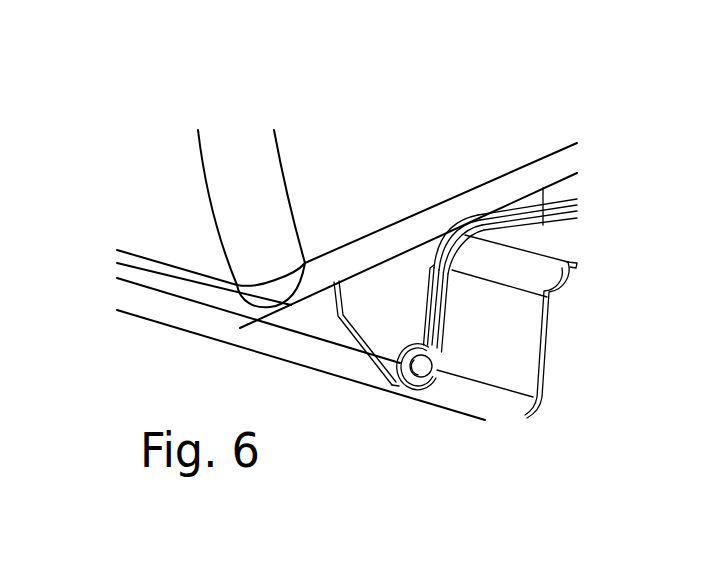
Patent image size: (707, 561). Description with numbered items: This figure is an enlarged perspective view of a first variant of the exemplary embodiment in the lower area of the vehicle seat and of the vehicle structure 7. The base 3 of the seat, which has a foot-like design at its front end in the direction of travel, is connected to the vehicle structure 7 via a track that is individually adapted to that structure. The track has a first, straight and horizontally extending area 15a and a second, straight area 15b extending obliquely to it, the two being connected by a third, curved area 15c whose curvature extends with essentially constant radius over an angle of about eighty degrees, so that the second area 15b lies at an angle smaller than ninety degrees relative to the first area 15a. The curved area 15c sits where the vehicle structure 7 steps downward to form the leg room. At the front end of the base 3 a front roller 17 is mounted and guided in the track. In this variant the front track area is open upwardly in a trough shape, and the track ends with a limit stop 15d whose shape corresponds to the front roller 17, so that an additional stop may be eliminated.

The base 3 is at (358, 302).
The vehicle structure 7 is at (547, 350).
The first, straight and horizontally extending area 15a is at (582, 198).
The second, straight area 15b is at (423, 311).
The third, curved area 15c is at (450, 240).
The limit stop 15d is at (404, 392).
The front roller 17 is at (440, 374).